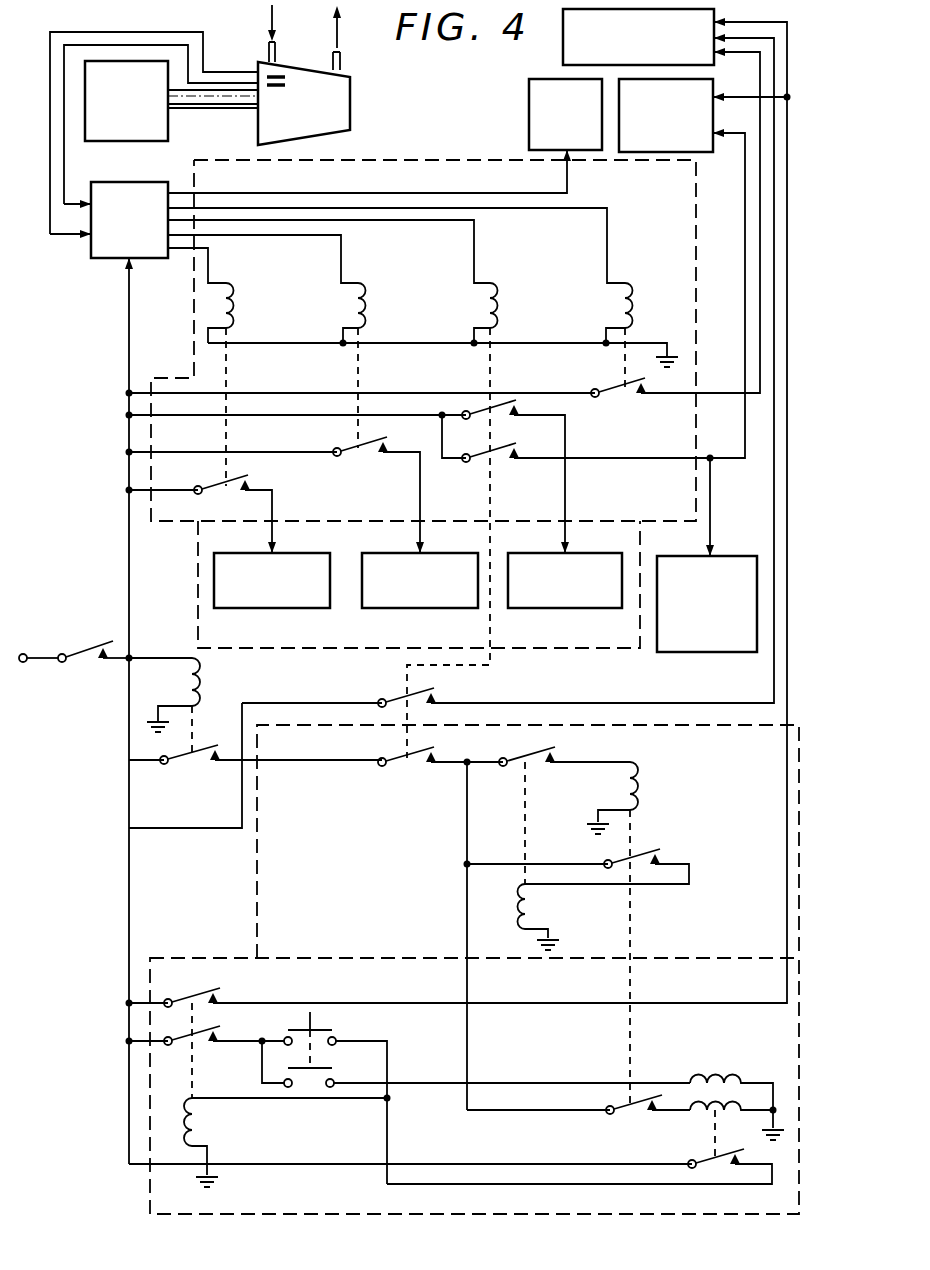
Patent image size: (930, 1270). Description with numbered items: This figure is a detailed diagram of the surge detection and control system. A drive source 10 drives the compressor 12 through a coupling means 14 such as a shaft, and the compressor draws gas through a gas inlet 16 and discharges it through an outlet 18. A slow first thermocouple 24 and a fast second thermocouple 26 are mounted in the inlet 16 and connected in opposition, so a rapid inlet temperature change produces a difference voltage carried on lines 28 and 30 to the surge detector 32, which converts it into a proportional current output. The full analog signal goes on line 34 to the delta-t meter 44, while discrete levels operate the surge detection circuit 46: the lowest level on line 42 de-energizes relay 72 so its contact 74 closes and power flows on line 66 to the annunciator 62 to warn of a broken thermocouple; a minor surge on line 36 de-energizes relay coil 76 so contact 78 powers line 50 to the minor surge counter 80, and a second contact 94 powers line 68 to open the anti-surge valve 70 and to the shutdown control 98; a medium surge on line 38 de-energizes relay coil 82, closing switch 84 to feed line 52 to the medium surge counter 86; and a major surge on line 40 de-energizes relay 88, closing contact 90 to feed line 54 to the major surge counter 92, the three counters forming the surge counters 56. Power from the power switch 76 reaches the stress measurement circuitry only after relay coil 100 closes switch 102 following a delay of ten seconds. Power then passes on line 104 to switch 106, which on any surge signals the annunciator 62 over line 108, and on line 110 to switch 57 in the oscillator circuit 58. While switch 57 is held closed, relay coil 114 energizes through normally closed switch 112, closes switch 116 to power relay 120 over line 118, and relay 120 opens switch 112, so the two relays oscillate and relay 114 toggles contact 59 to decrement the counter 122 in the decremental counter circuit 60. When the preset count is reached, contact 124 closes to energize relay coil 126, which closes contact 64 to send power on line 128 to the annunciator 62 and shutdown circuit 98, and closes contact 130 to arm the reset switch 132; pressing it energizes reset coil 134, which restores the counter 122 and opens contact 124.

The drive source 10 is at (140, 112).
The compressor 12 is at (324, 110).
The coupling means 14 is at (218, 104).
The gas inlet 16 is at (267, 46).
The discharge pipe 18 is at (342, 60).
The first thermocouple 24 is at (278, 88).
The second thermocouple 26 is at (278, 74).
The line 28 is at (64, 166).
The line 30 is at (56, 240).
The surge detector 32 is at (146, 232).
The line 34 is at (570, 184).
The line 36 is at (432, 226).
The line 38 is at (300, 240).
The line 40 is at (183, 252).
The line 42 is at (566, 212).
The delta-t meter 44 is at (529, 108).
The surge detection circuit 46 is at (462, 158).
The line 50 is at (567, 426).
The line 52 is at (404, 455).
The line 54 is at (264, 489).
The surge counters 56 is at (198, 568).
The switch 57 is at (414, 758).
The oscillator circuit 58 is at (257, 888).
The switch contact 59 is at (628, 1105).
The decremental counter circuit 60 is at (150, 1190).
The annunciator 62 is at (572, 26).
The contact 64 is at (208, 990).
The line 66 is at (737, 393).
The line 68 is at (668, 458).
The anti-surge valve 70 is at (716, 652).
The relay 72 is at (625, 300).
The switch contact 74 is at (604, 390).
The relay coil 76 is at (504, 300).
The first switch contact 78 is at (480, 400).
The minor surge counter 80 is at (545, 553).
The relay coil 82 is at (374, 300).
The switch 84 is at (346, 446).
The medium surge counter 86 is at (385, 553).
The relay 88 is at (243, 300).
The contact 90 is at (210, 486).
The major surge counter 92 is at (245, 553).
The second contact 94 is at (486, 462).
The shutdown control 98 is at (700, 143).
The relay coil 100 is at (204, 690).
The switch 102 is at (190, 756).
The line 104 is at (320, 703).
The switch 106 is at (395, 697).
The line 108 is at (600, 703).
The line 110 is at (356, 766).
The switch 112 is at (530, 752).
The relay coil 114 is at (645, 786).
The switch 116 is at (645, 850).
The line 118 is at (504, 863).
The relay 120 is at (538, 905).
The decremental counter 122 is at (706, 1110).
The contact 124 is at (716, 1166).
The relay coil 126 is at (198, 1122).
The line 128 is at (370, 1003).
The switch contact 130 is at (218, 1014).
The reset switch 132 is at (325, 1028).
The reset coil 134 is at (690, 1078).